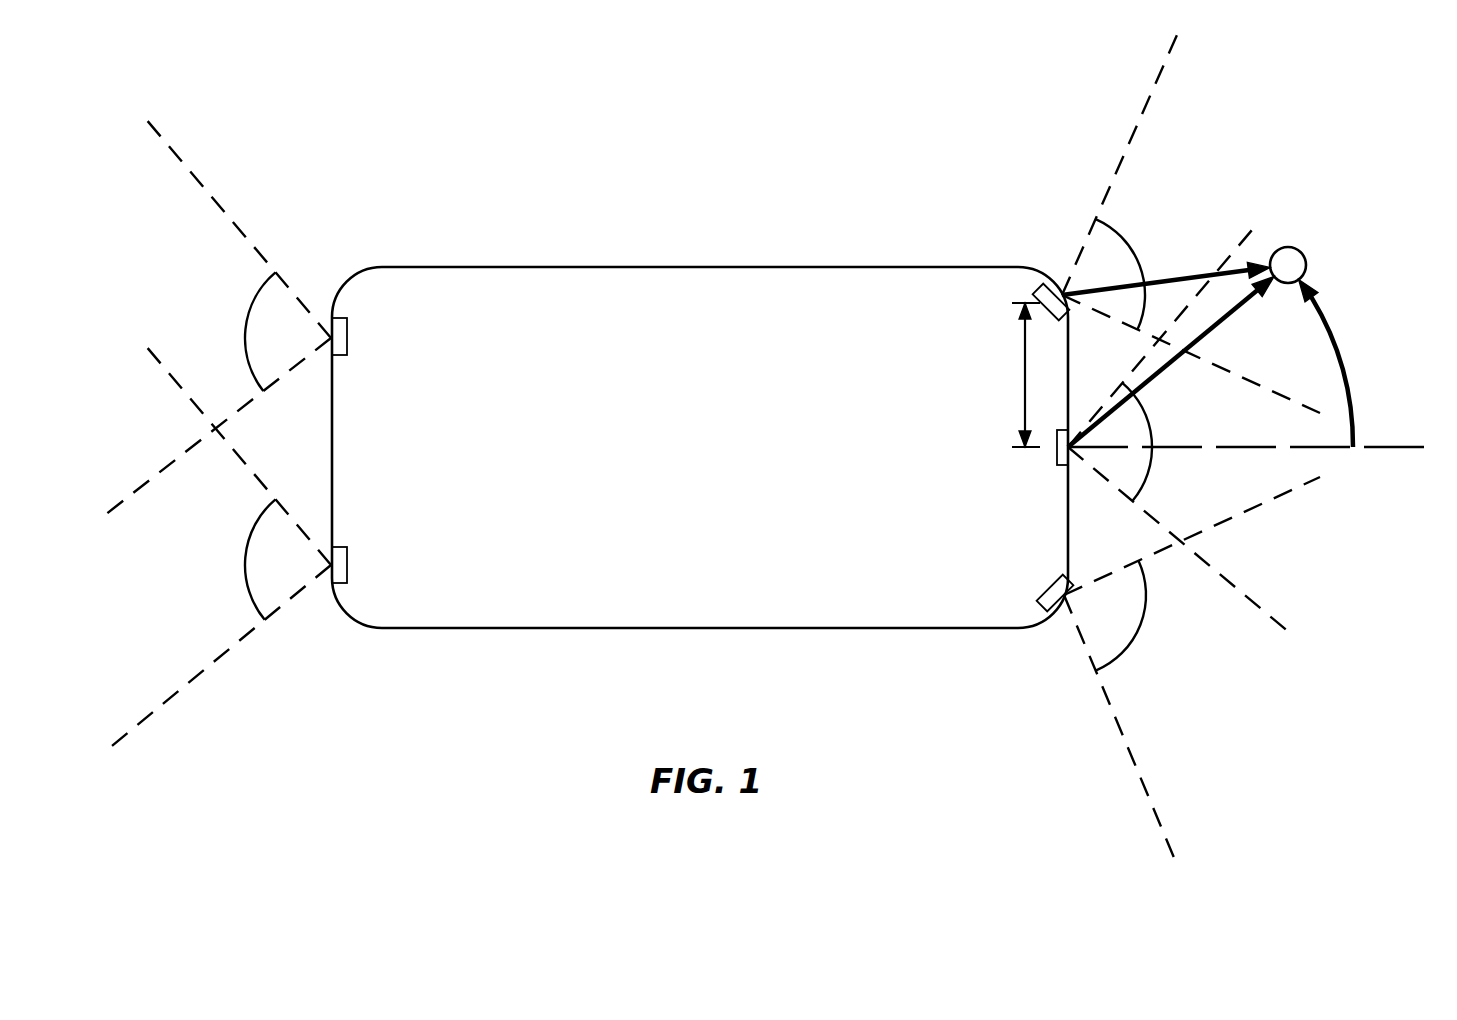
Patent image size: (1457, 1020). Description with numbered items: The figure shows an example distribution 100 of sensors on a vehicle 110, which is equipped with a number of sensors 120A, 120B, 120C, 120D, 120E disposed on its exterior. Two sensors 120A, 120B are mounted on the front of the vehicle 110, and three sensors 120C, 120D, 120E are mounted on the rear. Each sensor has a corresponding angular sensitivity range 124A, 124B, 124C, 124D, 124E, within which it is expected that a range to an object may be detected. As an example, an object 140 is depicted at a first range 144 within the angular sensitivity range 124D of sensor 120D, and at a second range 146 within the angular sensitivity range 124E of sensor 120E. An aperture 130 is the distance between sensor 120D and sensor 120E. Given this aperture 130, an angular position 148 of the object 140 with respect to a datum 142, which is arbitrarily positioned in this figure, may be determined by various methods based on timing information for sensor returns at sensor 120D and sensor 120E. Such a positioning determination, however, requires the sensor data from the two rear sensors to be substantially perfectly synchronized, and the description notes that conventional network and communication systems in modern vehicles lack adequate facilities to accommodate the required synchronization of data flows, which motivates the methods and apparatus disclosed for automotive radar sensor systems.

The distribution of sensors 100 is at (860, 112).
The vehicle 110 is at (682, 267).
The sensor 120A is at (347, 327).
The sensor 120B is at (347, 556).
The sensor 120C is at (1041, 592).
The sensor 120D is at (1057, 455).
The sensor 120E is at (1040, 293).
The angular sensitivity range 124A is at (250, 304).
The angular sensitivity range 124B is at (243, 552).
The angular sensitivity range 124C is at (1128, 654).
The angular sensitivity range 124D is at (1148, 471).
The angular sensitivity range 124E is at (1127, 236).
The aperture 130 is at (1025, 380).
The object 140 is at (1292, 247).
The datum 142 is at (1377, 453).
The first range 144 is at (1216, 332).
The second range 146 is at (1182, 277).
The angular position 148 is at (1337, 344).